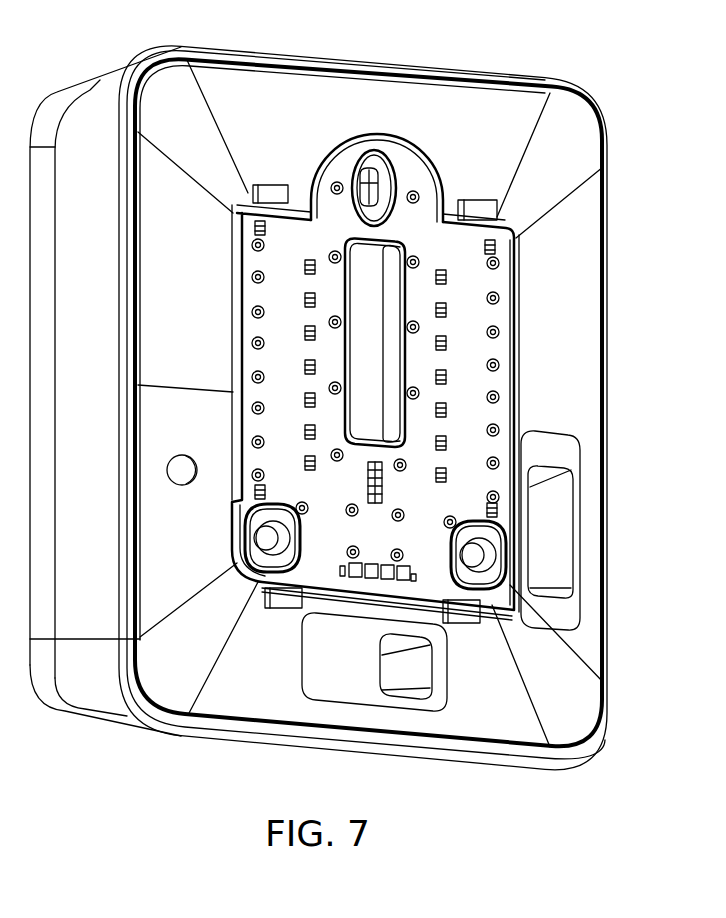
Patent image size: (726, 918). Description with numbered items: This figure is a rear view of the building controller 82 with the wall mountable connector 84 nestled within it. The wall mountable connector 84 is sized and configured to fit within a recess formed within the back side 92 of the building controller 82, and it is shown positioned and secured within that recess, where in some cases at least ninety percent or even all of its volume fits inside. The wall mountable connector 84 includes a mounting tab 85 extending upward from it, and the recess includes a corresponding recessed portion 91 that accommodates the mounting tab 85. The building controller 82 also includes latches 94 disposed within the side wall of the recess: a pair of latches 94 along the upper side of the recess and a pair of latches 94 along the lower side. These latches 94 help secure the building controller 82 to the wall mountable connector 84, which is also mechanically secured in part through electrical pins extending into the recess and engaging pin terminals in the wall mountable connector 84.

The building controller 82 is at (575, 130).
The wall mountable connector 84 is at (470, 353).
The mounting tab 85 is at (400, 167).
The recessed portion 91 is at (369, 134).
The back side 92 is at (269, 118).
The latches 94 is at (272, 192).